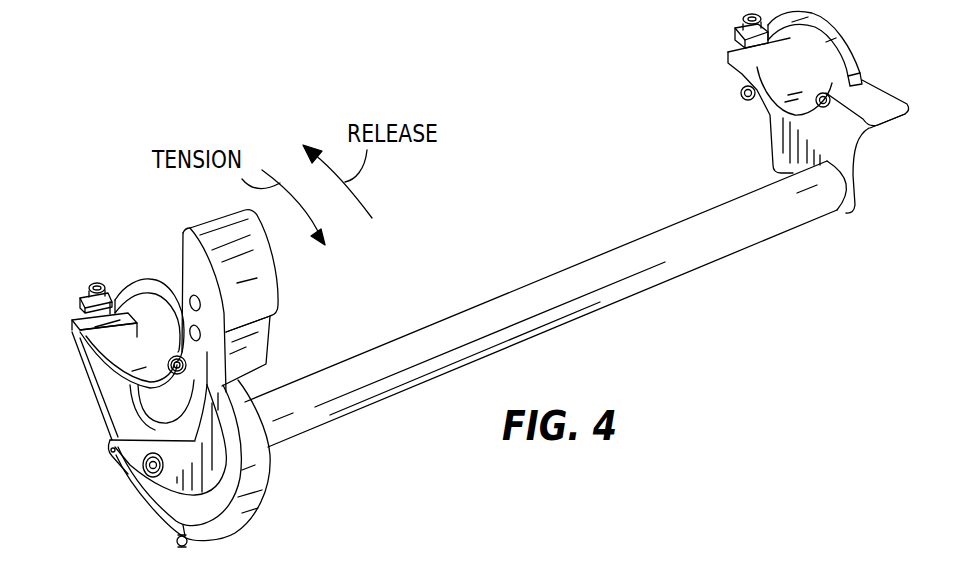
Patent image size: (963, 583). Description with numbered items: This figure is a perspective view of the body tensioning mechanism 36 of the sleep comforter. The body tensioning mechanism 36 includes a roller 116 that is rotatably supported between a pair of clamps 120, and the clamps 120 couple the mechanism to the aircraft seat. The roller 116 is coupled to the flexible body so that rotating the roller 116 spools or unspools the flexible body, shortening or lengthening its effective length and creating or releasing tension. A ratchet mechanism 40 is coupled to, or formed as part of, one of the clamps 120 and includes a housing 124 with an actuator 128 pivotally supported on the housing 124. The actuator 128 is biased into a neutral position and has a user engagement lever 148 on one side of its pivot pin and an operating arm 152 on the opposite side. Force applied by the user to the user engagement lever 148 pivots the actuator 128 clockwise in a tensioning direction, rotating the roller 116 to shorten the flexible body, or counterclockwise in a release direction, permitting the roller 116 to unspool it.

The body tensioning mechanism 36 is at (137, 534).
The ratchet mechanism 40 is at (95, 483).
The roller 116 is at (623, 253).
The clamps 120 is at (873, 103).
The housing 124 is at (272, 480).
The actuator 128 is at (223, 243).
The user engagement lever 148 is at (283, 288).
The operating arm 152 is at (127, 447).